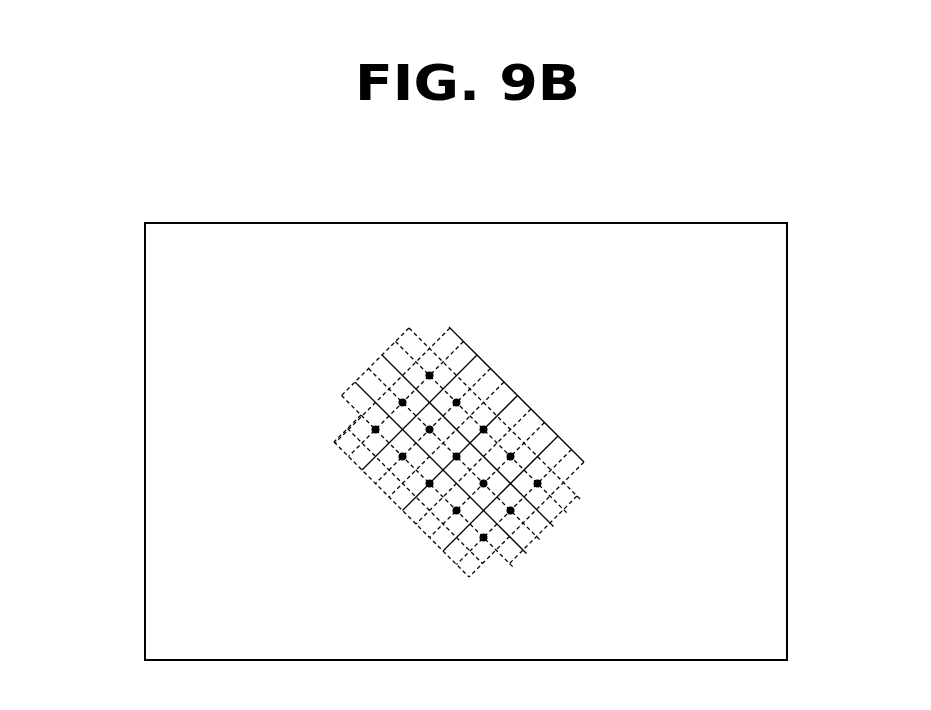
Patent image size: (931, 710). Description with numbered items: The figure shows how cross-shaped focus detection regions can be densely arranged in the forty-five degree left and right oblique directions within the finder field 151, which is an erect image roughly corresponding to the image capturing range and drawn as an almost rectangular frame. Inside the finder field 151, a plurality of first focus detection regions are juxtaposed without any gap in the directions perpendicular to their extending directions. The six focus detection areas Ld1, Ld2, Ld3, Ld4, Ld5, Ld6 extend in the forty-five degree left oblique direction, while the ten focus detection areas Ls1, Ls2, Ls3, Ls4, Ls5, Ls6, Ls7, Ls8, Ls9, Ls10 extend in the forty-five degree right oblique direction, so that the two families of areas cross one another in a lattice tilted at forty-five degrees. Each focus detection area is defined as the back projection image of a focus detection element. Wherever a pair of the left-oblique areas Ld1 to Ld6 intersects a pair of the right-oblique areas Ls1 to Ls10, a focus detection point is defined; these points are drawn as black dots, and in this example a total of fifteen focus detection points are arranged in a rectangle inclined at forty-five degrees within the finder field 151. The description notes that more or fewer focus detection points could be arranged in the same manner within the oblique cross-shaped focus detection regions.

The finder field 151 is at (763, 223).
The focus detection area Ld1 is at (409, 328).
The focus detection area Ld2 is at (396, 341).
The focus detection area Ld3 is at (382, 355).
The focus detection area Ld4 is at (368, 368).
The focus detection area Ld5 is at (355, 382).
The focus detection area Ld6 is at (340, 396).
The focus detection area Ls1 is at (450, 328).
The focus detection area Ls2 is at (464, 341).
The focus detection area Ls3 is at (477, 355).
The focus detection area Ls4 is at (491, 368).
The focus detection area Ls5 is at (504, 382).
The focus detection area Ls6 is at (518, 395).
The focus detection area Ls7 is at (531, 409).
The focus detection area Ls8 is at (545, 422).
The focus detection area Ls9 is at (558, 436).
The focus detection area Ls10 is at (572, 449).